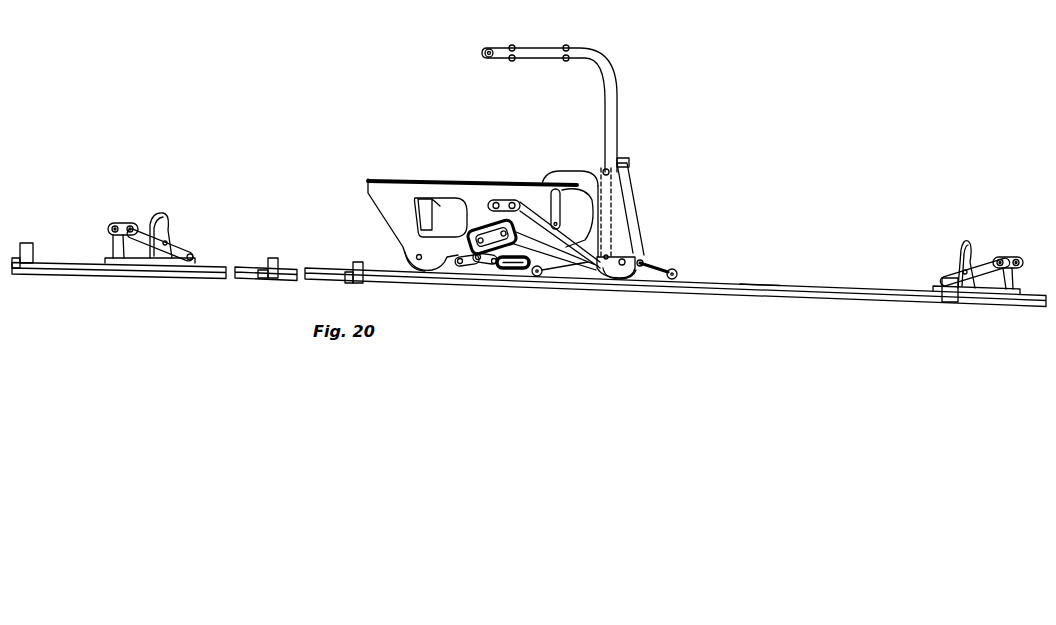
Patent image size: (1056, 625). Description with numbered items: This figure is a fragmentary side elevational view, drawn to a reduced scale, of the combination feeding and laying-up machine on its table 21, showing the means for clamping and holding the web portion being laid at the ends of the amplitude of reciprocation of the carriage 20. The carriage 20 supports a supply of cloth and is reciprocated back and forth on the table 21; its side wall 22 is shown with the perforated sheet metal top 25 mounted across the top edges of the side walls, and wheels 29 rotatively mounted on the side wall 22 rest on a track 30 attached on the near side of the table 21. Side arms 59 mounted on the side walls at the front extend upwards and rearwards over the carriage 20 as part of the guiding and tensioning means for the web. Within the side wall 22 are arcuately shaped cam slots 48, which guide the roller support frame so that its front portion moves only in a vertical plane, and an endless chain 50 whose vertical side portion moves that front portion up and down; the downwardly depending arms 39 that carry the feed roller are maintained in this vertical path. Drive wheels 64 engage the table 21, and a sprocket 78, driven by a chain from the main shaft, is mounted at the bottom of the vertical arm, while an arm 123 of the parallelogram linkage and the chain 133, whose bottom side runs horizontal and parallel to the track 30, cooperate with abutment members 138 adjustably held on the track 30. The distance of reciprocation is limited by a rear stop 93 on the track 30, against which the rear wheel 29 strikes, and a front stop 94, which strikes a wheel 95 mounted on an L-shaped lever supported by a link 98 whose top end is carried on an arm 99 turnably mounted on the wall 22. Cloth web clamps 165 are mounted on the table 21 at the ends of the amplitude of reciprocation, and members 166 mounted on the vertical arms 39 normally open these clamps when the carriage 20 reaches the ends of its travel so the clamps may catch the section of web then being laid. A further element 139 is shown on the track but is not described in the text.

The carriage 20 is at (375, 178).
The table 21 is at (818, 295).
The side wall 22 is at (382, 198).
The perforated sheet metal top 25 is at (399, 180).
The wheels 29 is at (412, 270).
The track 30 is at (758, 288).
The downwardly depending arms 39 is at (620, 233).
The arcuately shaped cam slots 48 is at (556, 185).
The endless member (chain) 50 is at (623, 190).
The side arms 59 is at (614, 99).
The drive wheel 64 is at (492, 270).
The sprocket 78 is at (481, 236).
The rear stop 93 is at (34, 254).
The front stop 94 is at (950, 300).
The wheel 95 is at (650, 265).
The link 98 is at (641, 208).
The arm 99 is at (631, 163).
The arm 123 is at (554, 262).
The chain 133 is at (513, 268).
The abutment member 138 is at (274, 259).
The rail clamp 139 is at (358, 263).
The cloth web clamps 165 is at (144, 231).
The members 166 is at (566, 268).